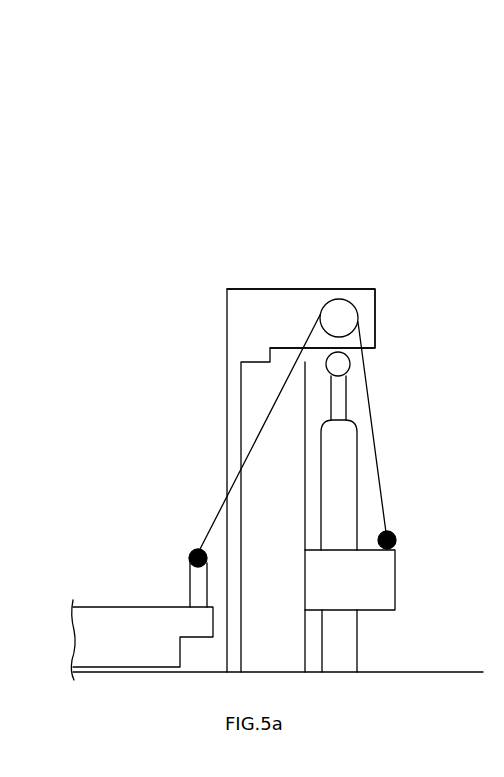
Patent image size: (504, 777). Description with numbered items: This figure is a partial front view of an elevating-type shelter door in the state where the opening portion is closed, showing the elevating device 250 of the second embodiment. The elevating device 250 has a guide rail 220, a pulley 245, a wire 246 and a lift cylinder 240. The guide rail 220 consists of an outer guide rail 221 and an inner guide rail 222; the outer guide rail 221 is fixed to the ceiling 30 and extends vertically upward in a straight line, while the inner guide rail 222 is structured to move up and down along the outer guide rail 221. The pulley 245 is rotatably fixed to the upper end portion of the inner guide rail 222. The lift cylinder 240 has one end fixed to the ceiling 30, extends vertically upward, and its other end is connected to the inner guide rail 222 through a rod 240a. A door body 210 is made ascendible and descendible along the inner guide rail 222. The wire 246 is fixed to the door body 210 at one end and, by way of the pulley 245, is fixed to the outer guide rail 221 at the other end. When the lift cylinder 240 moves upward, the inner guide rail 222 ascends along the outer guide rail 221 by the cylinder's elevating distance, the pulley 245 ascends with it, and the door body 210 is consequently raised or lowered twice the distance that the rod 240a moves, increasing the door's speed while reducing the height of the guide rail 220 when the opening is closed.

The ceiling 30 is at (450, 672).
The door body 210 is at (118, 607).
The guide rail 220 is at (118, 380).
The outer guide rail 221 is at (395, 582).
The inner guide rail 222 is at (270, 289).
The lift cylinder 240 is at (357, 437).
The rod 240a is at (347, 397).
The pulley 245 is at (338, 299).
The wire 246 is at (378, 478).
The elevating device 250 is at (412, 236).